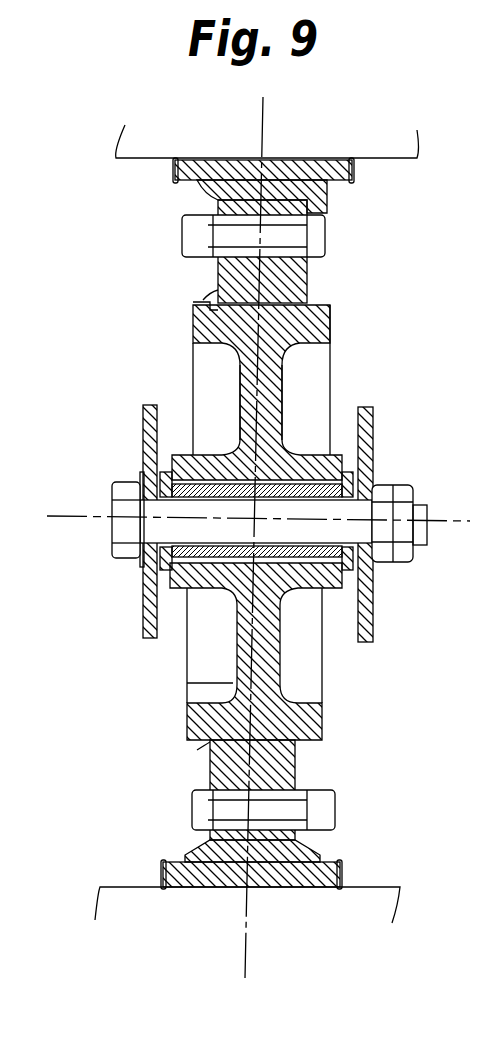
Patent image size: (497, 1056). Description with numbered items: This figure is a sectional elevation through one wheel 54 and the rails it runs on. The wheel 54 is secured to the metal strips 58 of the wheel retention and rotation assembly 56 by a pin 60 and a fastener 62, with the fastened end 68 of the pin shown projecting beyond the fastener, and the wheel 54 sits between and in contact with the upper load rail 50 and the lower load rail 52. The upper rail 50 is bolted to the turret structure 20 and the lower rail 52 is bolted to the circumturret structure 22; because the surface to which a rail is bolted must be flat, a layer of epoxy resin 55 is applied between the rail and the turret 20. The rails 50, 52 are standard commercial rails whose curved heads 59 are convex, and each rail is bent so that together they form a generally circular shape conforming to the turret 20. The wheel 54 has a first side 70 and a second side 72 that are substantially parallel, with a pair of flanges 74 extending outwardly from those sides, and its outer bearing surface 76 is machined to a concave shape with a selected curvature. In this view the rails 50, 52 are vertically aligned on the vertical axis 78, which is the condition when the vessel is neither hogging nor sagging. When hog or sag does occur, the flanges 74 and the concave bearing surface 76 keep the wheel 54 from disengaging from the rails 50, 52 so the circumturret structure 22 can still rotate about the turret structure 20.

The turret structure 20 is at (333, 147).
The circumturret structure 22 is at (293, 903).
The upper load rail 50 is at (290, 293).
The lower load rail 52 is at (273, 763).
The wheel 54 is at (267, 418).
The layer of epoxy resin 55 is at (330, 176).
The wheel retention and rotation assembly 56 is at (118, 470).
The metal strips 58 is at (140, 602).
The curved heads 59 is at (327, 303).
The pin 60 is at (120, 523).
The fastener 62 is at (397, 487).
The bolt end 68 is at (442, 522).
The first side 70 is at (200, 322).
The second side 72 is at (330, 328).
The flanges 74 is at (195, 300).
The outer bearing surface 76 is at (212, 305).
The vertical axis 78 is at (245, 940).